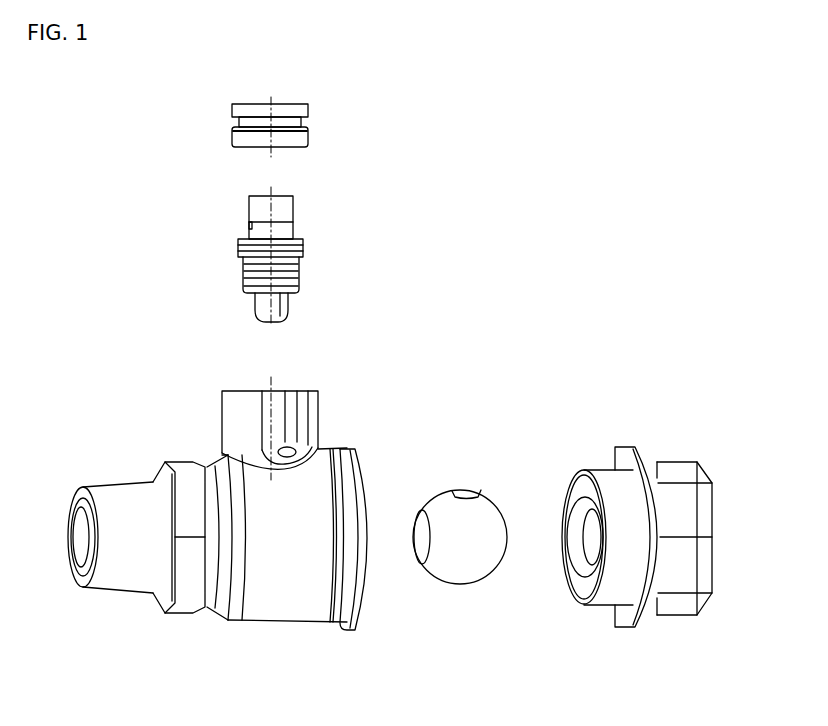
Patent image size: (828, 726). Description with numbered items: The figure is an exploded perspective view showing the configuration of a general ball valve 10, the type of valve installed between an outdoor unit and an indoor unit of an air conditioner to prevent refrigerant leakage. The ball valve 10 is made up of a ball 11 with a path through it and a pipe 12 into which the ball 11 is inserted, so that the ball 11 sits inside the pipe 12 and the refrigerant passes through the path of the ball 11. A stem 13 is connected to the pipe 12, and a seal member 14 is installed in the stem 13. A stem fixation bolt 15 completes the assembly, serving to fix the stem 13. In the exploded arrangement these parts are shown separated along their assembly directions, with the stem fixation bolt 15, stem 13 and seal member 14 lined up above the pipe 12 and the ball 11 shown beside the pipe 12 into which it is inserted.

The ball valve 10 is at (536, 218).
The ball 11 is at (463, 572).
The pipe 12 is at (278, 605).
The stem 13 is at (288, 211).
The seal member 14 is at (297, 282).
The stem fixation bolt 15 is at (302, 138).